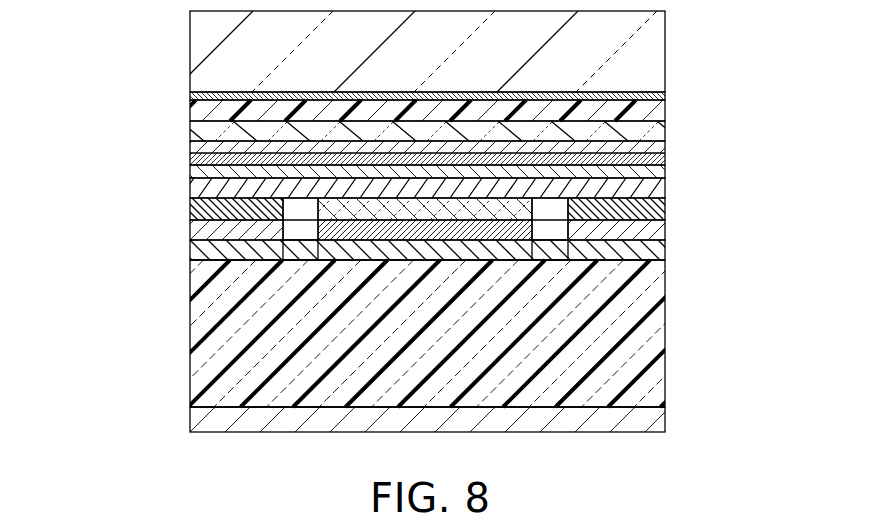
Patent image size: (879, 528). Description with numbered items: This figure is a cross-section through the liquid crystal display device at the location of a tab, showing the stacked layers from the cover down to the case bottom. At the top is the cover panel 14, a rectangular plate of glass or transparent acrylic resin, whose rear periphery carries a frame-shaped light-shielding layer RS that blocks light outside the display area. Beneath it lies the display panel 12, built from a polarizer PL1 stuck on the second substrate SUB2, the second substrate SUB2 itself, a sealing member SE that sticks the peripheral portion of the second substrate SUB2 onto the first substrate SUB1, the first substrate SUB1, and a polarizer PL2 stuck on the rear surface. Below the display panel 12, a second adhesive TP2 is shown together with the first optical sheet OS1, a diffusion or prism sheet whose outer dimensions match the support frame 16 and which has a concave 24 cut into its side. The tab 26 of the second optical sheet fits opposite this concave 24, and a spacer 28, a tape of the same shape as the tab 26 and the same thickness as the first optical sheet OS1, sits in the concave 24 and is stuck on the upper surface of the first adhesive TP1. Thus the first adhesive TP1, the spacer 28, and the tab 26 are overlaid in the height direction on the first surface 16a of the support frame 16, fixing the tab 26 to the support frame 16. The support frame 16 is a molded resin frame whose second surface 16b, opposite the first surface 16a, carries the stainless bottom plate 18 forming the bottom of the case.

The cover panel 14 is at (647, 43).
The light-shielding layer RS is at (665, 97).
The display panel 12 is at (77, 85).
The polarizer PL1 is at (187, 113).
The second substrate SUB2 is at (187, 133).
The sealing member SE is at (187, 158).
The first substrate SUB1 is at (187, 171).
The polarizer PL2 is at (187, 190).
The second adhesive TP2 is at (667, 210).
The first optical sheet OS1 is at (230, 231).
The first adhesive TP1 is at (660, 252).
The concave 24 is at (297, 245).
The tab 26 is at (300, 233).
The spacer 28 is at (373, 210).
The support frame 16 is at (667, 362).
The first surface 16a is at (620, 259).
The second surface 16b is at (667, 401).
The bottom plate 18 is at (667, 420).